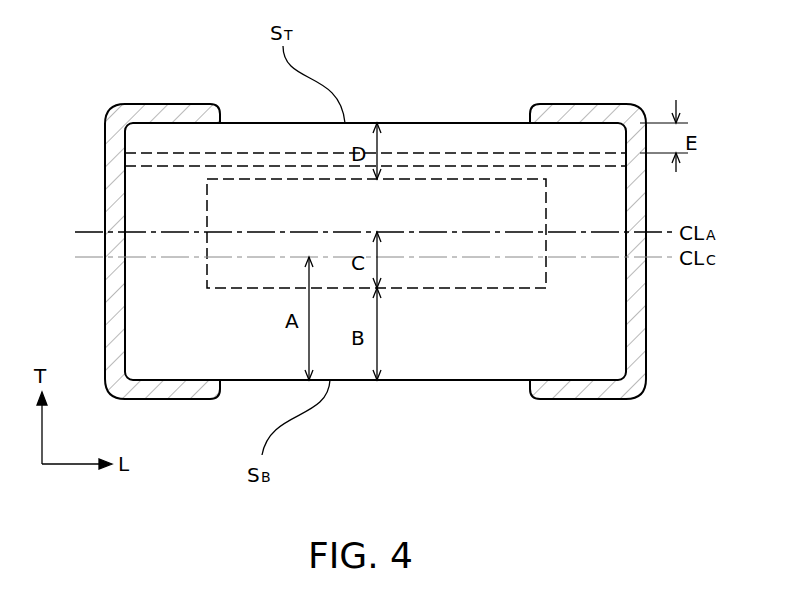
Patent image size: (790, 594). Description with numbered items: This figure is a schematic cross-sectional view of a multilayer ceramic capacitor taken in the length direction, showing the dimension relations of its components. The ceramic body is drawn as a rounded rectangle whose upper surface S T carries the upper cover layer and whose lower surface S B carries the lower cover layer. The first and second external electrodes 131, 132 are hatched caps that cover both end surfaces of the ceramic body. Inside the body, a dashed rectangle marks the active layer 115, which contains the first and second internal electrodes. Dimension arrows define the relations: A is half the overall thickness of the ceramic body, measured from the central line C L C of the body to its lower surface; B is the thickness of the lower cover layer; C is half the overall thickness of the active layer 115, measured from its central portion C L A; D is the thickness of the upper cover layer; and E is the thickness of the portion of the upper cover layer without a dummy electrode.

The first external electrode 131 is at (171, 110).
The second external electrode 132 is at (590, 110).
The active layer 115 is at (546, 173).